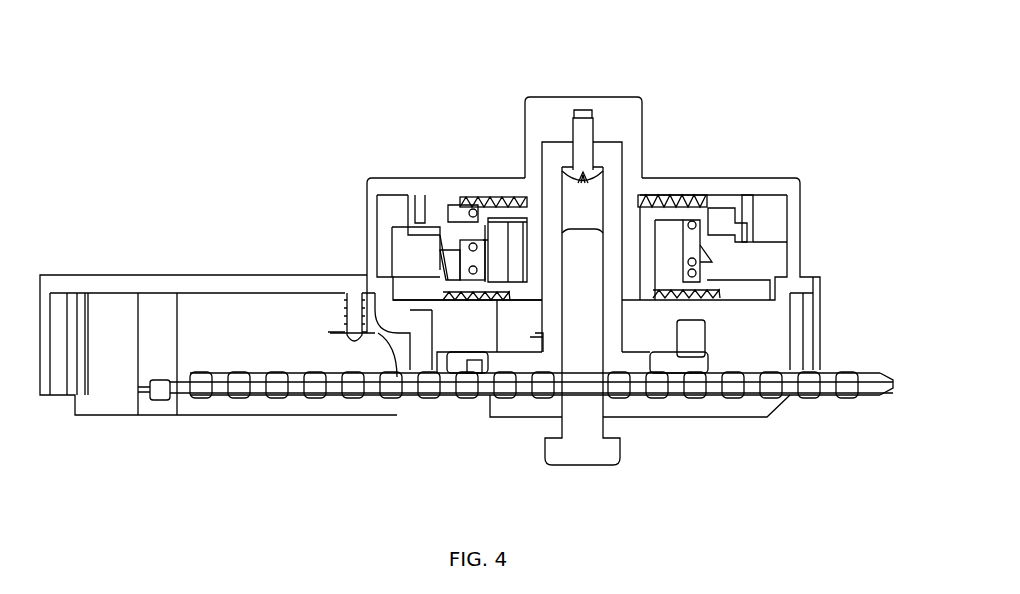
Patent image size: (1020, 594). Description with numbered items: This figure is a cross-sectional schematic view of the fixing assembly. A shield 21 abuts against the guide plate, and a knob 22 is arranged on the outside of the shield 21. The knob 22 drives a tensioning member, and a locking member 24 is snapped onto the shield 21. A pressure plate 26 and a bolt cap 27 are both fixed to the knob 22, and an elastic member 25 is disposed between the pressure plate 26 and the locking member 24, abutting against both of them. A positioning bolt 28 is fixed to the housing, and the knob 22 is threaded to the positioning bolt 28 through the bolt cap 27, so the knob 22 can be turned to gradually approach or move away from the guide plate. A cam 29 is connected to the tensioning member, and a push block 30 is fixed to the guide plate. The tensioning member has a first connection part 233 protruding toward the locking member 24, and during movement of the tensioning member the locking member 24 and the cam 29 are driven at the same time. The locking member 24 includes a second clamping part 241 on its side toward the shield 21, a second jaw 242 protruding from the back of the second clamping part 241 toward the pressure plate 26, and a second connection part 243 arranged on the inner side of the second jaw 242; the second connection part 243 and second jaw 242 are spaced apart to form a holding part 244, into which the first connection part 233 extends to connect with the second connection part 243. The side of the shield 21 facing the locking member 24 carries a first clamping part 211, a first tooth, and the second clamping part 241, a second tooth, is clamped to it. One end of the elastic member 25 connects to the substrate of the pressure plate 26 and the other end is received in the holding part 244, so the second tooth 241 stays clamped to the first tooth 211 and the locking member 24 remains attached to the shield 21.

The shield 21 is at (758, 305).
The knob 22 is at (618, 117).
The locking member 24 is at (740, 287).
The elastic member 25 is at (692, 262).
The pressure plate 26 is at (733, 230).
The bolt cap 27 is at (555, 180).
The positioning bolt 28 is at (590, 448).
The cam 29 is at (682, 338).
The push block 30 is at (683, 365).
The first clamping part 211 is at (470, 300).
The first connection part 233 is at (487, 240).
The second clamping part 241 is at (443, 292).
The second jaw 242 is at (458, 270).
The second connection part 243 is at (503, 235).
The holding part 244 is at (470, 260).